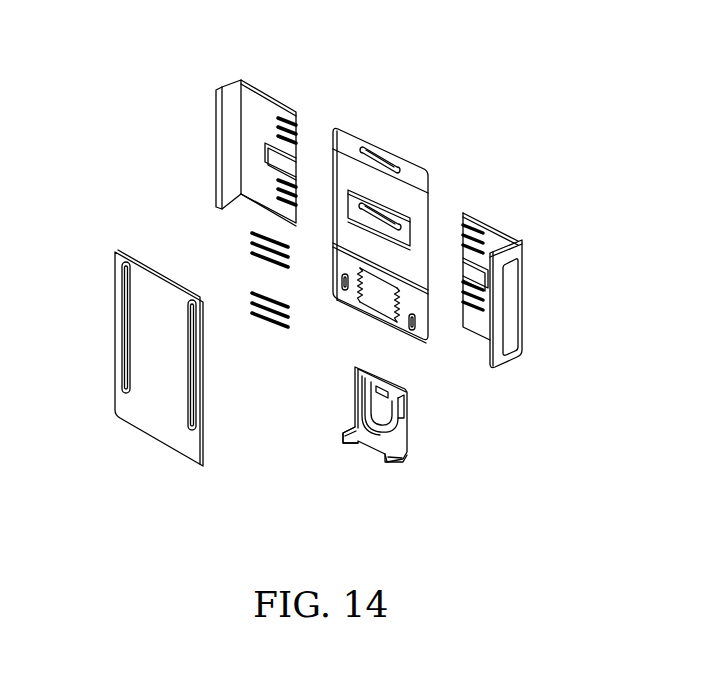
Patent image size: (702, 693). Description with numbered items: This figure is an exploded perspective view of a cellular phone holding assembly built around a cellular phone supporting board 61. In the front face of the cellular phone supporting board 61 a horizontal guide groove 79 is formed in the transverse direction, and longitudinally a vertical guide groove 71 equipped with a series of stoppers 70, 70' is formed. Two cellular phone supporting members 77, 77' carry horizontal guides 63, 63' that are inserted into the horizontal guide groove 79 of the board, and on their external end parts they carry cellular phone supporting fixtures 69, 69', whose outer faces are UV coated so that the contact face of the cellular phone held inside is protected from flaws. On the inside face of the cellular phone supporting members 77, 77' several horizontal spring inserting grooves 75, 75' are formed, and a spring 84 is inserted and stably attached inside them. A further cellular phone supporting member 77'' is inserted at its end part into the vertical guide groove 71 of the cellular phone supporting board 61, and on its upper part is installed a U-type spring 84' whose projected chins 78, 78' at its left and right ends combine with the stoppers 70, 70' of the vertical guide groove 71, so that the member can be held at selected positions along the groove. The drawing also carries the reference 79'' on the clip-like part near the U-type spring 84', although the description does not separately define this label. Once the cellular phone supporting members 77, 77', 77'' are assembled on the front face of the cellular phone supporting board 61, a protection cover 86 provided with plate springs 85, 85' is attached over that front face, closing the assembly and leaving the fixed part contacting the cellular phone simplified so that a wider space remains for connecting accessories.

The cellular phone supporting board 61 is at (382, 142).
The horizontal guide 63 is at (268, 126).
The horizontal guide 63' is at (500, 253).
The cellular phone supporting fixture 69 is at (199, 124).
The cellular phone supporting fixture 69' is at (535, 299).
The stopper 70 is at (349, 317).
The stopper 70' is at (423, 354).
The vertical guide groove 71 is at (383, 298).
The horizontal spring inserting groove 75 is at (289, 122).
The horizontal spring inserting groove 75' is at (486, 229).
The cellular phone supporting member 77 is at (254, 64).
The cellular phone supporting member 77' is at (516, 213).
The cellular phone supporting member 77'' is at (437, 442).
The projected chin 78 is at (359, 472).
The projected chin 78' is at (421, 469).
The horizontal guide groove 79 is at (387, 199).
The clip body 79'' is at (391, 459).
The spring 84 is at (263, 319).
The U-type spring 84' is at (382, 458).
The plate spring 85 is at (102, 374).
The plate spring 85' is at (174, 418).
The protection cover 86 is at (160, 402).